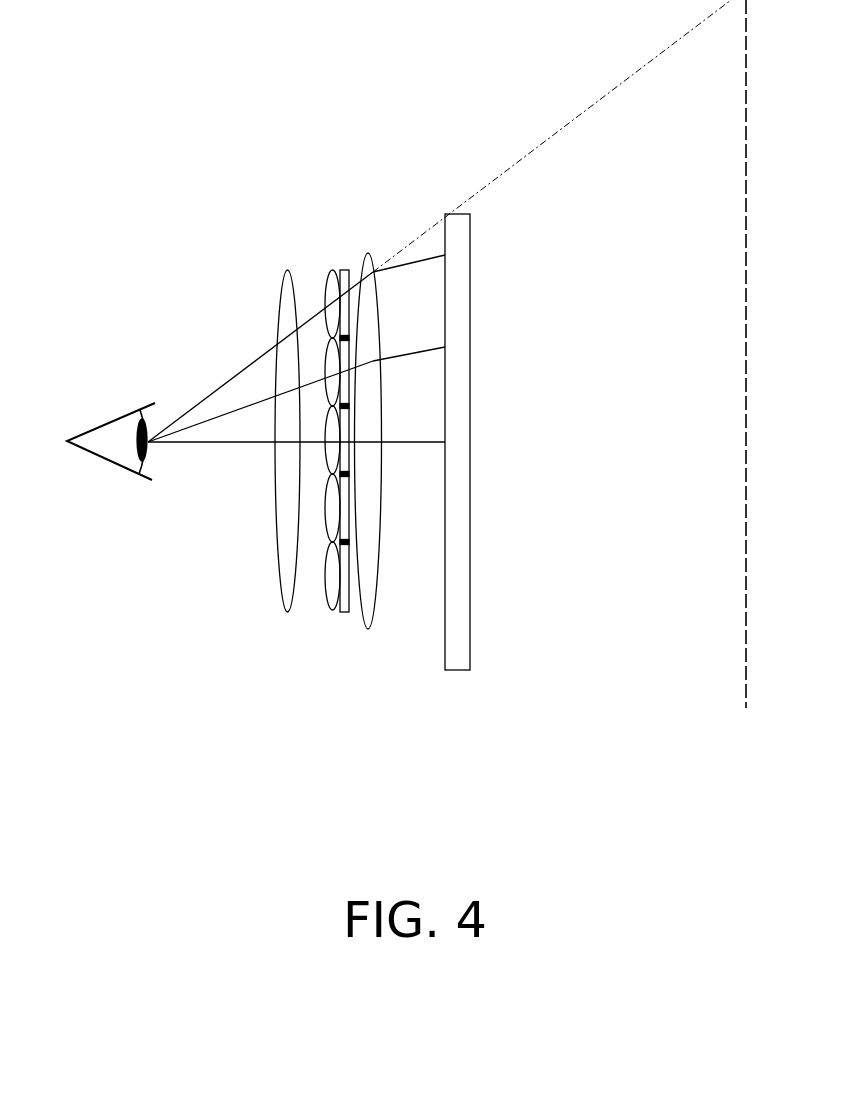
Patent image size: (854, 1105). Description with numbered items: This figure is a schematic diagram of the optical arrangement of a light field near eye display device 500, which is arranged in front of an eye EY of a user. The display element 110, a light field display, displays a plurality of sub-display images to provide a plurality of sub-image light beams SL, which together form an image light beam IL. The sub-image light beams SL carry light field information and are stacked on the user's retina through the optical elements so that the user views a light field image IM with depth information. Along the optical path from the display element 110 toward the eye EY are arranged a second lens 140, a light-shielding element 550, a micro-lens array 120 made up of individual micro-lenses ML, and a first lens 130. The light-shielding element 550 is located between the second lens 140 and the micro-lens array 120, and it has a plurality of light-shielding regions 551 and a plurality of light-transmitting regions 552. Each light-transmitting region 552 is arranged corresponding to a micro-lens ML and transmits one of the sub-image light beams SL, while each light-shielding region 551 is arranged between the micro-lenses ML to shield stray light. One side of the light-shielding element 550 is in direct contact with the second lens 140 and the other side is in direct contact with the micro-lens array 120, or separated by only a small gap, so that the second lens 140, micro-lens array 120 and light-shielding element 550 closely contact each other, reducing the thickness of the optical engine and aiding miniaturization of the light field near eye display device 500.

The light field near eye display device 500 is at (158, 772).
The display element 110 is at (465, 652).
The micro-lens array 120 is at (332, 600).
The first lens 130 is at (283, 598).
The second lens 140 is at (366, 622).
The light-shielding element 550 is at (344, 616).
The light-shielding regions 551 is at (342, 335).
The light-transmitting regions 552 is at (350, 527).
The eye EY is at (108, 422).
The image light beam IL is at (237, 376).
The sub-image light beams SL is at (403, 268).
The micro-lens ML is at (335, 300).
The light field image IM is at (748, 683).